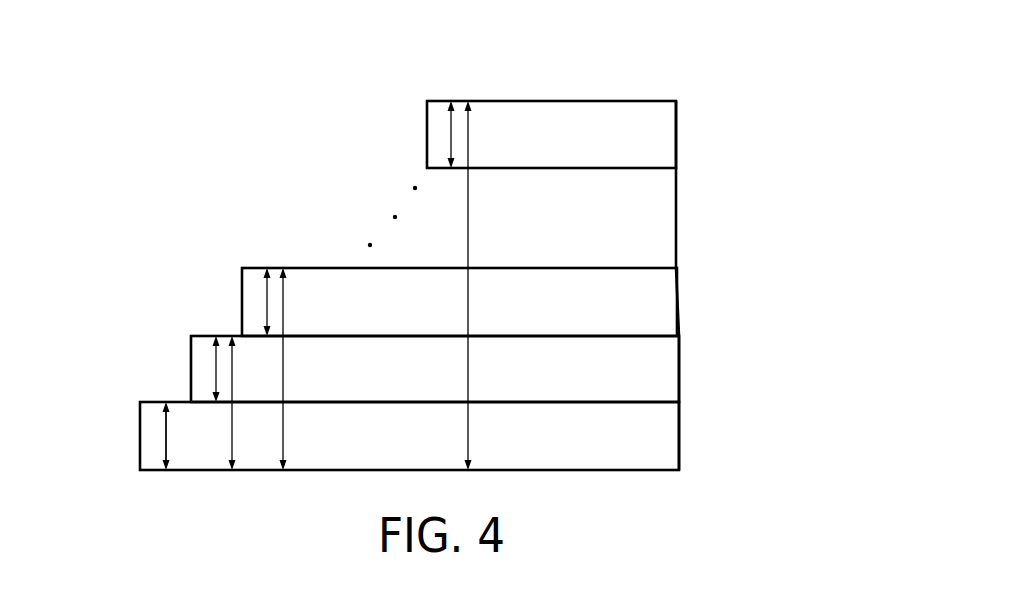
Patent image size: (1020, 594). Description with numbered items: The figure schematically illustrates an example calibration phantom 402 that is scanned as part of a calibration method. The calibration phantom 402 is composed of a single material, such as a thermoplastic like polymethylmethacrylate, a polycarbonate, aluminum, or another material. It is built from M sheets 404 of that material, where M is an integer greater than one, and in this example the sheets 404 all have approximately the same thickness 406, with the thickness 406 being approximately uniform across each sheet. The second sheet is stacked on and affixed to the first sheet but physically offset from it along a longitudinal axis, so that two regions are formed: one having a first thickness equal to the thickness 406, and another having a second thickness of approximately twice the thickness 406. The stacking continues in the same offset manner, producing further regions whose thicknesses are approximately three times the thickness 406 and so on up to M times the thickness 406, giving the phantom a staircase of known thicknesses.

The calibration phantom 402 is at (225, 128).
The sheets 404 is at (757, 80).
The thickness 406 is at (451, 137).